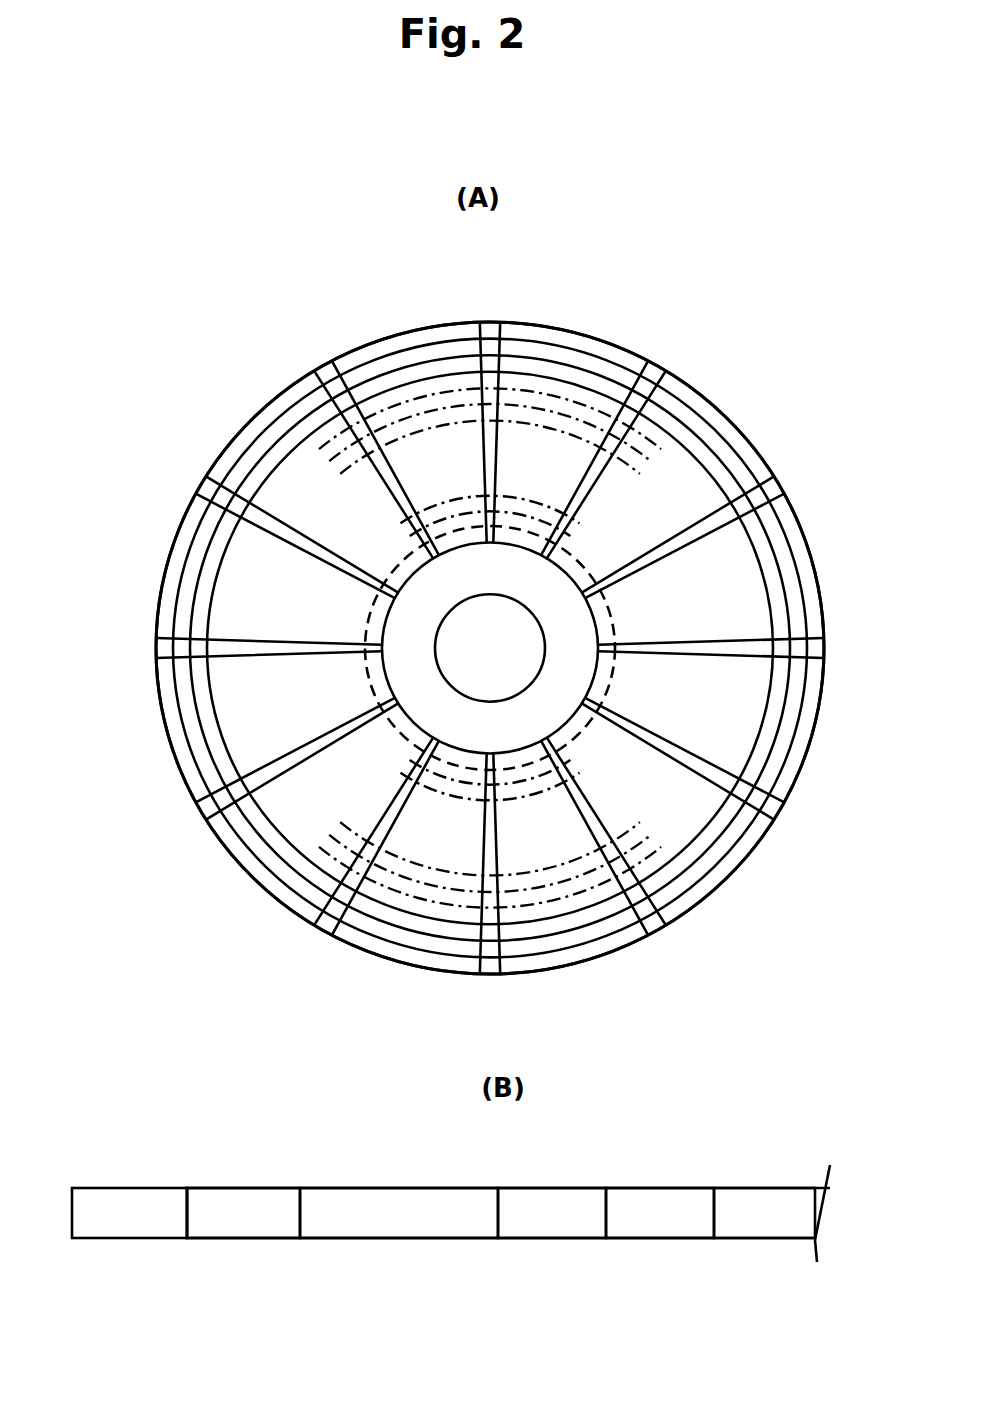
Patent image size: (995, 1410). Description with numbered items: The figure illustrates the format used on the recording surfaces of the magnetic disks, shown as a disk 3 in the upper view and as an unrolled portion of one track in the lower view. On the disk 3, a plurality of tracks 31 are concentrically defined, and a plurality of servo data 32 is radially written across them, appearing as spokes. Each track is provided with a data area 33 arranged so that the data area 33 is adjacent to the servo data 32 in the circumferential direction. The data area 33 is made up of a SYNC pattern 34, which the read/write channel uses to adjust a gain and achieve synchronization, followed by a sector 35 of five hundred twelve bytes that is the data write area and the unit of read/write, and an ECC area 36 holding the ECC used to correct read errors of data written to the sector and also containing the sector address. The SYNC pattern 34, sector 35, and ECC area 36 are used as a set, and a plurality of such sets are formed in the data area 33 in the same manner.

The optical disk 3 is at (200, 869).
The track 31 is at (713, 890).
The servo data 32 is at (200, 495).
The data area 33 is at (468, 308).
The SYNC pattern 34 is at (233, 1187).
The sector 35 is at (400, 1187).
The ECC area 36 is at (550, 1187).